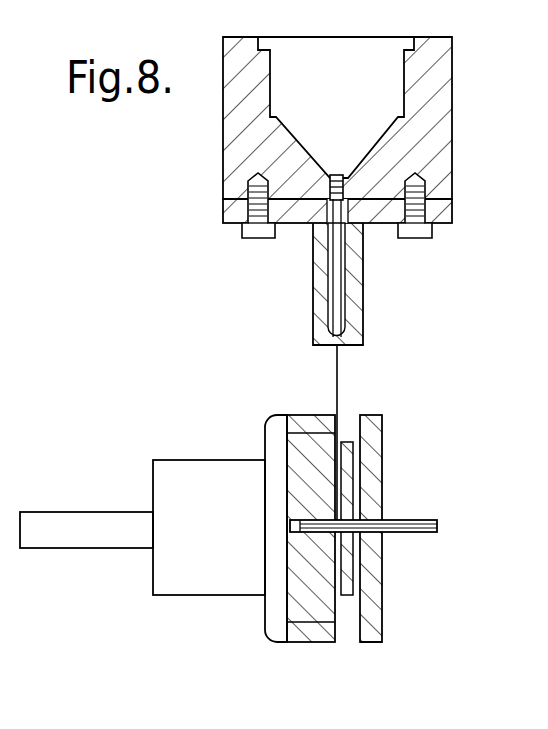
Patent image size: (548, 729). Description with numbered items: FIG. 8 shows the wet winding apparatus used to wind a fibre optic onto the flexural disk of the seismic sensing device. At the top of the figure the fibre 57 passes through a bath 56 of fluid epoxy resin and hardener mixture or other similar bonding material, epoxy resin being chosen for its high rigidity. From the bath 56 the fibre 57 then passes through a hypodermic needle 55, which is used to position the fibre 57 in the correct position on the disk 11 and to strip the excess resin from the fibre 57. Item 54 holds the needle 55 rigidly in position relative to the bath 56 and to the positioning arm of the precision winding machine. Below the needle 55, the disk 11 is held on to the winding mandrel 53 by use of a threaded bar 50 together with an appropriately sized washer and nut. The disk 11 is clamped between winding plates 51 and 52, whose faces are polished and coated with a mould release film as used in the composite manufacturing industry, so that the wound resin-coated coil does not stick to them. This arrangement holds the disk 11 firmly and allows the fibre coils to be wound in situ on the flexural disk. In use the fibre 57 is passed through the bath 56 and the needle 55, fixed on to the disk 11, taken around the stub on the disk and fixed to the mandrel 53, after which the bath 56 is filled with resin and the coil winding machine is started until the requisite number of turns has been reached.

The disk 11 is at (384, 641).
The threaded bar 50 is at (437, 524).
The winding plate 51 is at (383, 437).
The winding plate 52 is at (336, 372).
The winding mandrel 53 is at (187, 470).
The needle holder 54 is at (414, 240).
The hypodermic needle 55 is at (260, 240).
The bath 56 is at (452, 166).
The fibre 57 is at (337, 172).